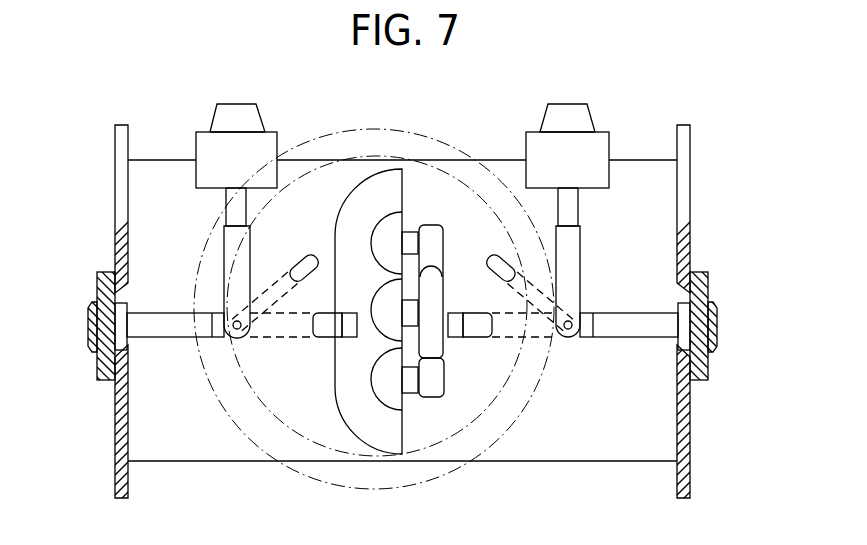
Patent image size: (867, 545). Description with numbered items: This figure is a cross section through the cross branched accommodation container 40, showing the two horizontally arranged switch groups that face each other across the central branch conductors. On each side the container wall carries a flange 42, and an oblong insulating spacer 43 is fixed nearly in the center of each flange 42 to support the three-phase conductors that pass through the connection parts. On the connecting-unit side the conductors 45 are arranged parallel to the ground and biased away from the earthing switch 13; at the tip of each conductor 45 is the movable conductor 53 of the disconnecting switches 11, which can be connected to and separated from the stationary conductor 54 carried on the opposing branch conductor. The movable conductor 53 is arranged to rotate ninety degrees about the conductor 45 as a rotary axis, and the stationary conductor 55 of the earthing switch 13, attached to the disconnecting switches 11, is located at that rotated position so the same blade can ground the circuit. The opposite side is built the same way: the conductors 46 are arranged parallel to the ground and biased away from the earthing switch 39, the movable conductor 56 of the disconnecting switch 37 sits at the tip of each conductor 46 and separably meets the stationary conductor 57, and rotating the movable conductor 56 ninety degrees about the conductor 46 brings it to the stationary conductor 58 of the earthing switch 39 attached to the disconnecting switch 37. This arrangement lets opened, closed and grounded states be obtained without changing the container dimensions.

The disconnecting switches 11 is at (440, 192).
The earthing switch 13 is at (267, 142).
The disconnecting switch 37 is at (597, 447).
The earthing switch 39 is at (603, 142).
The cross branched accommodation container 40 is at (160, 160).
The flange 42 is at (115, 420).
The oblong insulating spacer 43 is at (97, 366).
The conductors 45 is at (165, 332).
The conductors 46 is at (645, 330).
The movable conductor 53 is at (277, 335).
The stationary conductor 54 is at (325, 328).
The stationary conductor 55 is at (228, 215).
The movable conductor 56 is at (580, 282).
The stationary conductor 57 is at (475, 330).
The stationary conductor 58 is at (568, 208).